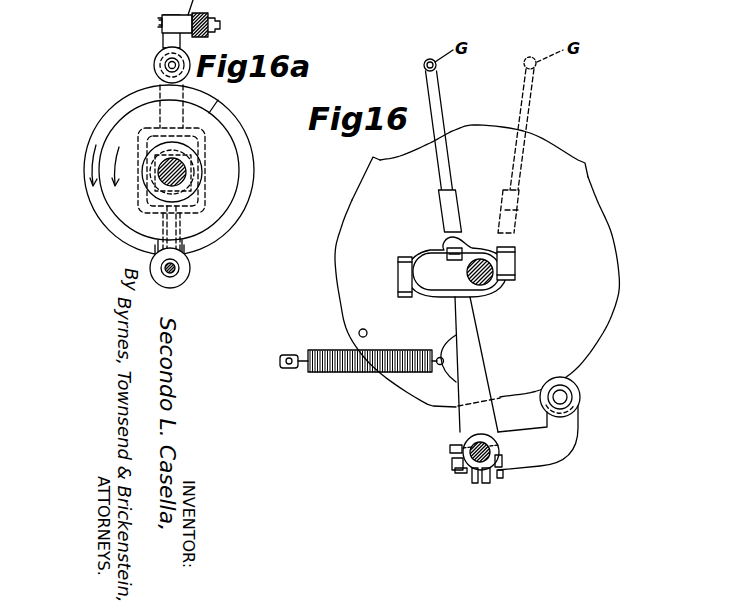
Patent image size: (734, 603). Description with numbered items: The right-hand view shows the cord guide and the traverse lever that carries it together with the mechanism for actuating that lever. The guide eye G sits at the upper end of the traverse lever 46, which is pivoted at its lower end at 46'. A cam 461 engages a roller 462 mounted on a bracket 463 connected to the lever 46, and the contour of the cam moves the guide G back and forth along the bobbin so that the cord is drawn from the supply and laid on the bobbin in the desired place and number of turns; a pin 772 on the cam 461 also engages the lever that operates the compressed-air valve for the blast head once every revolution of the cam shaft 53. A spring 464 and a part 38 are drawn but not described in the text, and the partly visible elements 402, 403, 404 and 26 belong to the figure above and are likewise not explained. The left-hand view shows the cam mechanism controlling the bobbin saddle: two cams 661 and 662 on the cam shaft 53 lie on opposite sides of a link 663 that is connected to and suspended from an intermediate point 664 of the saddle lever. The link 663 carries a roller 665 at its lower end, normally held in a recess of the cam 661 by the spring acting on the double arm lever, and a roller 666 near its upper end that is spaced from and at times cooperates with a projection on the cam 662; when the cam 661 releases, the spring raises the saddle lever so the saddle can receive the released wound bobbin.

In FIG. 16A, the cam 661 is at (243, 212).
In FIG. 16A, the cam 662 is at (137, 223).
In FIG. 16A, the link 663 is at (165, 118).
In FIG. 16A, the intermediate point 664 is at (160, 22).
In FIG. 16A, the roller 665 is at (187, 275).
In FIG. 16A, the roller 666 is at (158, 62).
In FIG. 16A, the cam shaft 53 is at (183, 180).
In FIG. 16, the cam shaft 53 is at (493, 283).
In FIG. 16A, the nut 38 is at (204, 19).
In FIG. 16, the traverse lever 46 is at (490, 244).
In FIG. 16, the pivot 46' is at (469, 470).
In FIG. 16, the cam 461 is at (606, 255).
In FIG. 16, the roller 462 is at (546, 402).
In FIG. 16, the bracket 463 is at (526, 455).
In FIG. 16, the spring 464 is at (348, 373).
In FIG. 16, the pin 772 is at (359, 331).
In FIG. 16, the element 402 is at (424, 8).
In FIG. 16, the element 403 is at (415, 8).
In FIG. 16, the element 404 is at (577, 8).
In FIG. 16, the element 26 is at (676, 8).